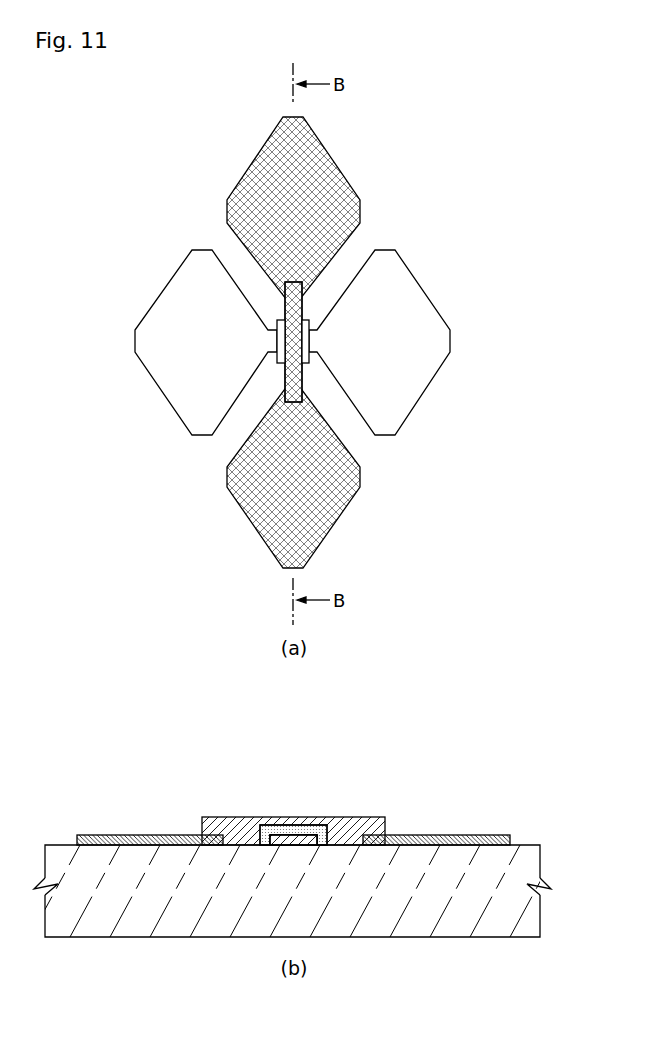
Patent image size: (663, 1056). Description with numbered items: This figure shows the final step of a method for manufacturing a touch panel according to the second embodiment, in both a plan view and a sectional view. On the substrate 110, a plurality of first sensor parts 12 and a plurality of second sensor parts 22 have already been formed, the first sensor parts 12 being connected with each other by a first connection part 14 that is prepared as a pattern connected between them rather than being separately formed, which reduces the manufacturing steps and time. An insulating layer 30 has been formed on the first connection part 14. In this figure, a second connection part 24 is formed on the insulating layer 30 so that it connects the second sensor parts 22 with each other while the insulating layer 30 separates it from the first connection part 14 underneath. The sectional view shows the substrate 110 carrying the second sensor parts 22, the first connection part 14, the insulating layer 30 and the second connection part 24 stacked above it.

The first sensor parts 12 is at (167, 302).
The first connection part 14 is at (313, 337).
The second sensor parts 22 is at (326, 148).
The second connection part 24 is at (292, 310).
The insulating layer 30 is at (273, 342).
The substrate 110 is at (537, 905).